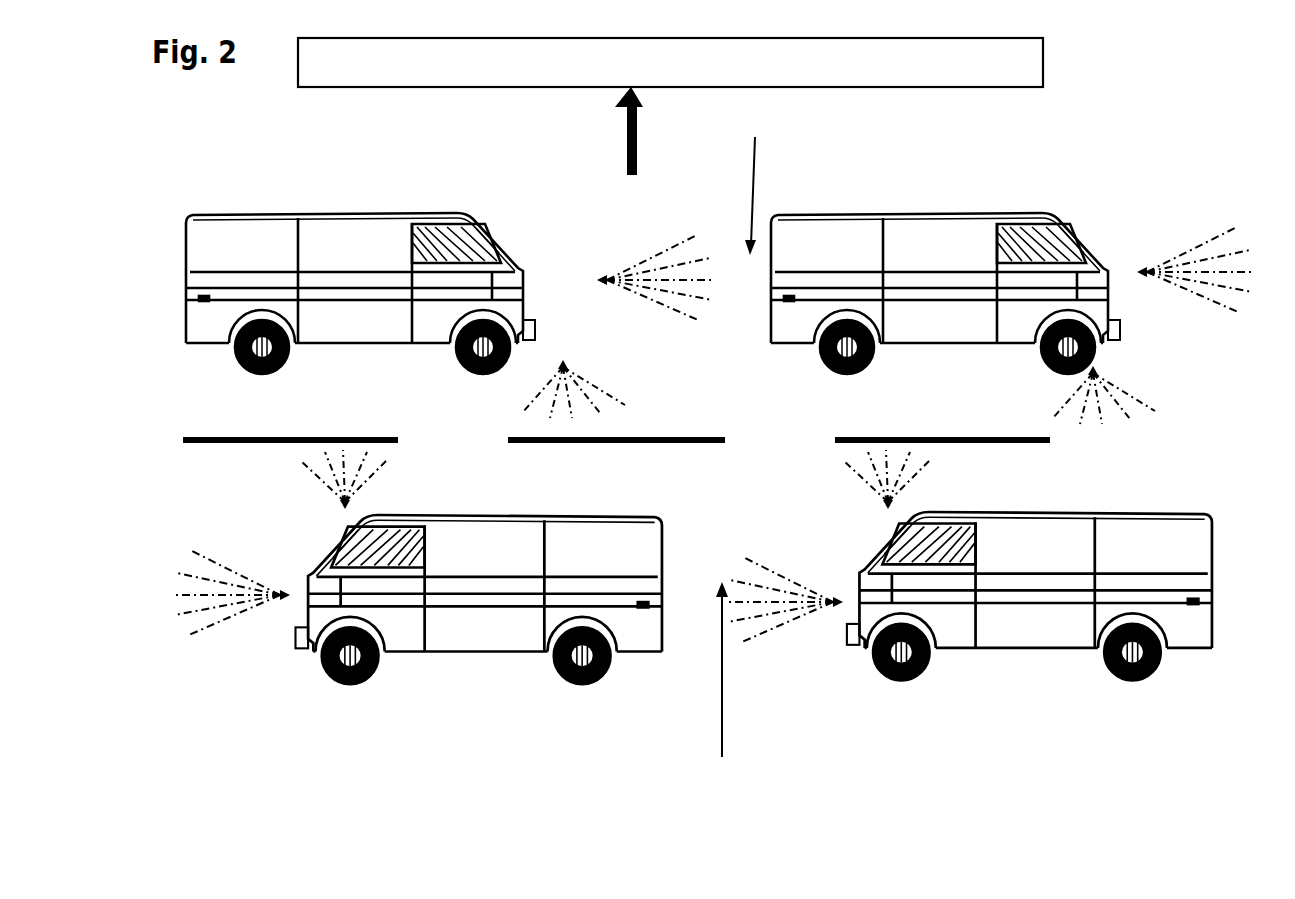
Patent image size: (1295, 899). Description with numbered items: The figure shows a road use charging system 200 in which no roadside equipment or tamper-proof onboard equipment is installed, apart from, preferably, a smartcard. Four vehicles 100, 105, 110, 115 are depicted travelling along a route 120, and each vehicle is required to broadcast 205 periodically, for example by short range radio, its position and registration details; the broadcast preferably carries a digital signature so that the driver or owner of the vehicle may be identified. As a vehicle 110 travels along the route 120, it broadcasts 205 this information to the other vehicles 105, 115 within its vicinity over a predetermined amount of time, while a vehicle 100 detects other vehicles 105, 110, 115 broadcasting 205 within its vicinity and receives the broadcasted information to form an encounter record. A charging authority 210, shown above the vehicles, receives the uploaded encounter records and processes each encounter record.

The vehicle 100 is at (298, 213).
The vehicle 105 is at (915, 210).
The vehicle 110 is at (332, 690).
The vehicle 115 is at (1072, 685).
The route 120 is at (742, 450).
The charging system 200 is at (713, 416).
The broadcast 205 is at (665, 312).
The charging authority 210 is at (670, 106).